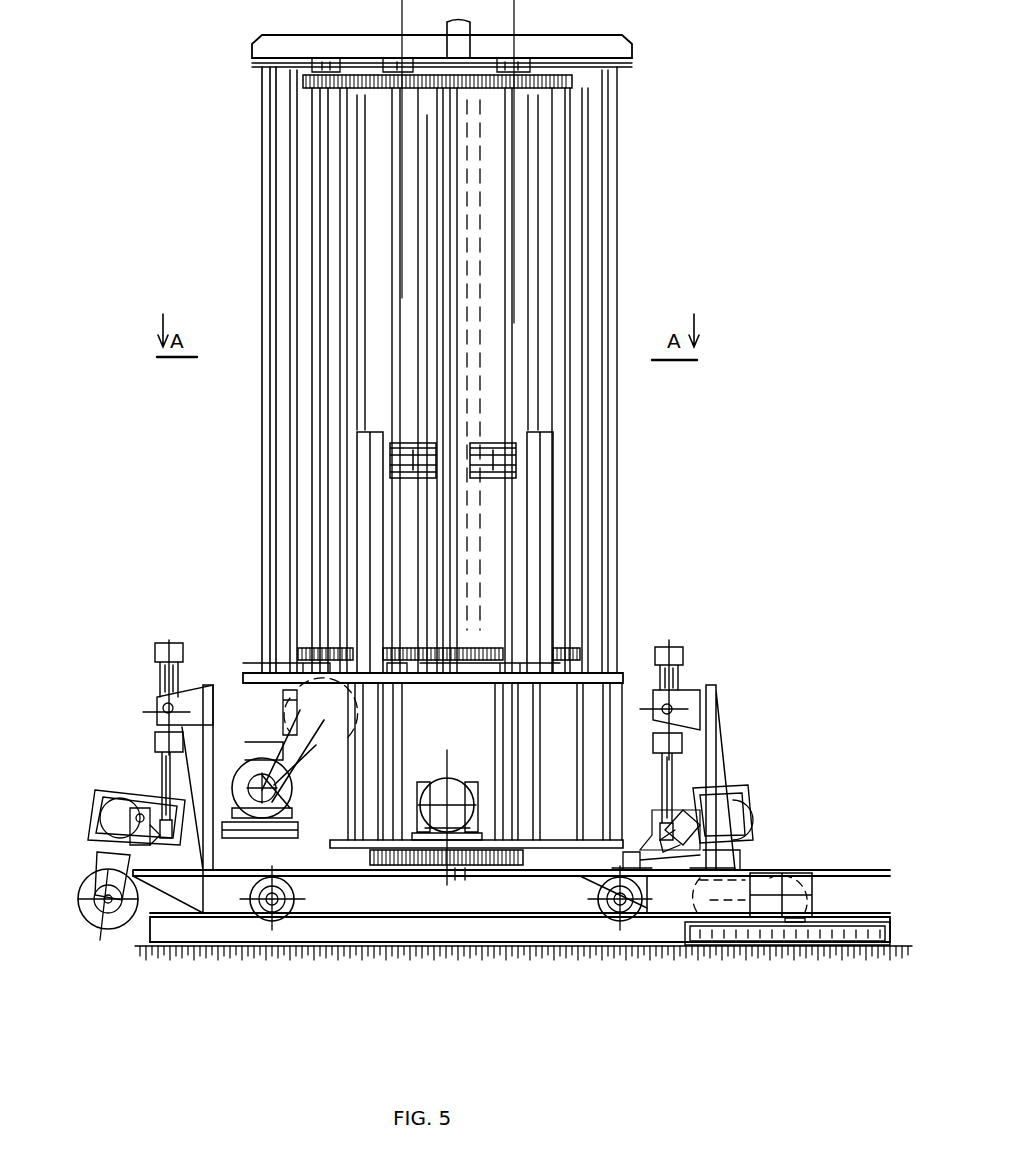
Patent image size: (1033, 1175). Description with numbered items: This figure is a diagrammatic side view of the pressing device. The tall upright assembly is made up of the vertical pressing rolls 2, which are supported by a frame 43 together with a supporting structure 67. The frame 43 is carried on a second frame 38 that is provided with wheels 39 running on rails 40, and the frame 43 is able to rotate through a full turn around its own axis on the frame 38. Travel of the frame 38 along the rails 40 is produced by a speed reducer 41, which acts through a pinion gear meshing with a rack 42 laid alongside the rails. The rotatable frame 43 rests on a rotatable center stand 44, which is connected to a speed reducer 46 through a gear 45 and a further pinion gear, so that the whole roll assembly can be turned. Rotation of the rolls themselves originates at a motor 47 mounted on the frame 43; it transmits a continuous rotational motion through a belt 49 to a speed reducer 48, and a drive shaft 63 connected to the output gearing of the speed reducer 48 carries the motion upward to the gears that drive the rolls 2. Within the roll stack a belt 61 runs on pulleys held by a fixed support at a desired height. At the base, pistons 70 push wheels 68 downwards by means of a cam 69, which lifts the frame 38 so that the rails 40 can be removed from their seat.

The vertical pressing rolls 2 is at (378, 172).
The second frame 38 is at (215, 905).
The wheels 39 is at (262, 915).
The rails 40 is at (325, 928).
The speed reducer 41 is at (800, 887).
The rack 42 is at (838, 935).
The frame 43 is at (570, 713).
The rotatable center stand 44 is at (420, 868).
The gear 45 is at (465, 868).
The speed reducer 46 is at (455, 786).
The motor 47 is at (245, 752).
The speed reducer 48 is at (300, 710).
The belt 49 is at (288, 745).
The belt 61 is at (410, 455).
The drive shaft 63 is at (318, 222).
The supporting structure 67 is at (275, 122).
The wheels 68 is at (85, 909).
The cam 69 is at (115, 818).
The pistons 70 is at (157, 652).